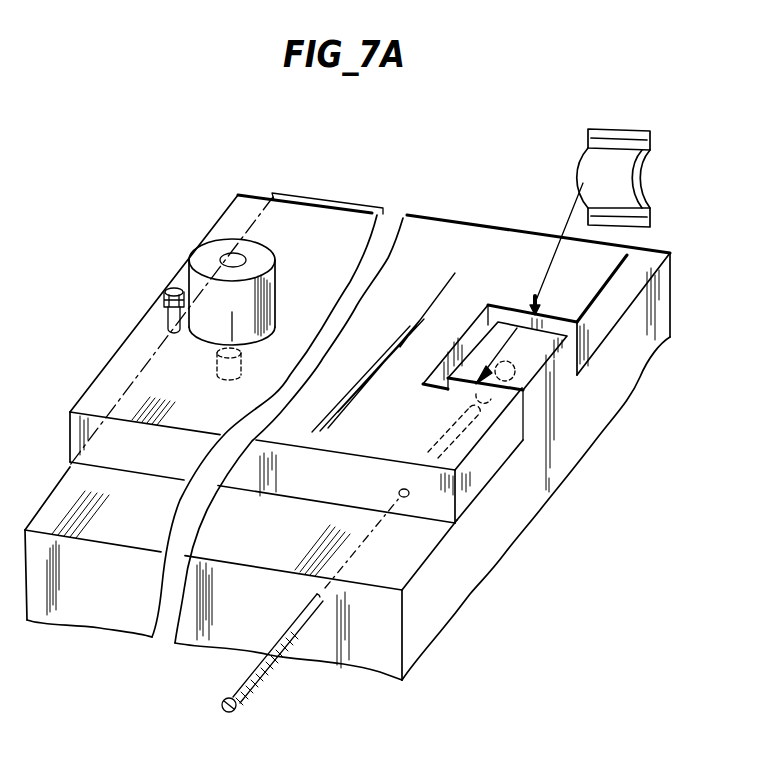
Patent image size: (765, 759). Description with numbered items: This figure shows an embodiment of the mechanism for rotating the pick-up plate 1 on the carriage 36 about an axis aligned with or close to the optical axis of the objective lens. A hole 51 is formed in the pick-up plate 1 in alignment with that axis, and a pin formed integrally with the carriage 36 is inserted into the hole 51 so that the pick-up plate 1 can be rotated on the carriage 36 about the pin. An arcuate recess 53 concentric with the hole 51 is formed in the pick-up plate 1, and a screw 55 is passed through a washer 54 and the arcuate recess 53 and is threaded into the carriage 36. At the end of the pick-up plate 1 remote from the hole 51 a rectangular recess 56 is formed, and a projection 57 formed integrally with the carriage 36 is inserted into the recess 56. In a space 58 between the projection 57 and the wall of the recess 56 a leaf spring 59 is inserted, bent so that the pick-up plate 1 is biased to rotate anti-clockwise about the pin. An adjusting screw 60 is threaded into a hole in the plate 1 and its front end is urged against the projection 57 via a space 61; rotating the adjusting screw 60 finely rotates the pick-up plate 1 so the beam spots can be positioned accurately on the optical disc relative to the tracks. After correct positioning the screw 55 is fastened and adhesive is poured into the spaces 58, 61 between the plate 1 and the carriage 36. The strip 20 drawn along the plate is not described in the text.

The pick-up plate 1 is at (337, 227).
The strip 20 is at (277, 280).
The carriage 36 is at (117, 615).
The hole 51 is at (217, 367).
The arcuate recess 53 is at (167, 323).
The washer 54 is at (166, 302).
The screw 55 is at (178, 298).
The rectangular recess 56 is at (505, 318).
The projection 57 is at (527, 360).
The space 58 is at (573, 330).
The leaf spring 59 is at (636, 176).
The adjusting screw 60 is at (267, 680).
The space 61 is at (515, 420).